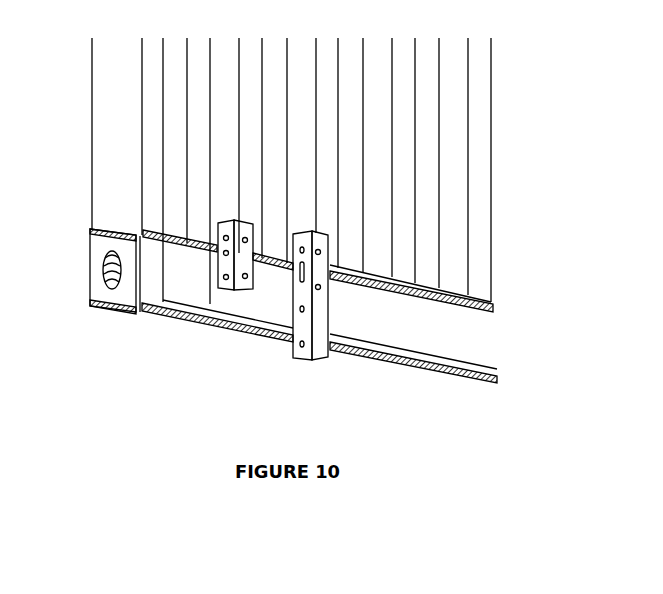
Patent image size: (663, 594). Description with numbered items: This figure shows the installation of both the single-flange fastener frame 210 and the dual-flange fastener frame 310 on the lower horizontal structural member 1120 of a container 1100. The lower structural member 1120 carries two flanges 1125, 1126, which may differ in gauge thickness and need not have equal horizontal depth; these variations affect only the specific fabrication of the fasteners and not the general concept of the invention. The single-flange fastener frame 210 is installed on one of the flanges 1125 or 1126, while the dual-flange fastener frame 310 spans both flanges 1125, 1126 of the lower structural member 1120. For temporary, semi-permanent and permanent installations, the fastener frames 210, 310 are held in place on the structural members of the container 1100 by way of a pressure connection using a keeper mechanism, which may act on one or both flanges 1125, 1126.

The container 1100 is at (97, 324).
The lower horizontal structural member 1120 is at (421, 327).
The flange 1125 is at (493, 310).
The flange 1126 is at (497, 380).
The single-flange fastener frame 210 is at (226, 268).
The dual-flange fastener frame 310 is at (293, 344).